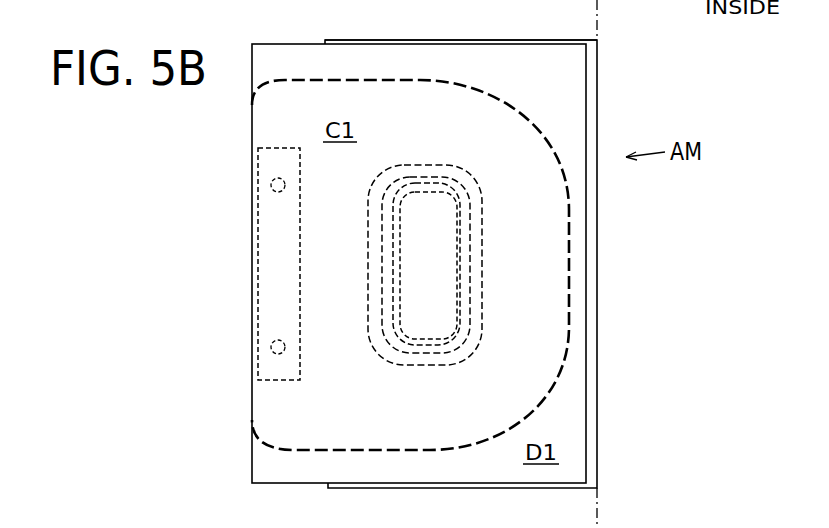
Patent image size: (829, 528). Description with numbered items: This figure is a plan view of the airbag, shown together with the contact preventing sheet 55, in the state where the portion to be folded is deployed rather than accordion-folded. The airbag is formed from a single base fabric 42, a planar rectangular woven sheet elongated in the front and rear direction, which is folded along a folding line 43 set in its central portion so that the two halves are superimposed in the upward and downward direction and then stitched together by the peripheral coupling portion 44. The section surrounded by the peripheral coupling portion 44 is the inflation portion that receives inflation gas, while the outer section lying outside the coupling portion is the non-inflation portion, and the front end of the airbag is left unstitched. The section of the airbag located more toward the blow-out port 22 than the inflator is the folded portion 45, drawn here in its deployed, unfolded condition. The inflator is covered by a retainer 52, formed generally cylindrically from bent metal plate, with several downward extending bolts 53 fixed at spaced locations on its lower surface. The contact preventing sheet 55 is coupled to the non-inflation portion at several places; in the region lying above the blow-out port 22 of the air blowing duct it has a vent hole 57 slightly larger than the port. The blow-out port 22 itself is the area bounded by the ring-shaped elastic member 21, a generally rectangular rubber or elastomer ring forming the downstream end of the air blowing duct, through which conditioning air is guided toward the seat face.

The base fabric 42 is at (253, 458).
The peripheral coupling portion 44 is at (283, 80).
The folded portion 45 is at (393, 53).
The folding line 43 is at (542, 6).
The contact preventing sheet 55 is at (593, 198).
The retainer 52 is at (258, 226).
The bolts 53 is at (268, 186).
The ring-shaped elastic member 21 is at (470, 239).
The vent hole 57 is at (476, 290).
The blow-out port 22 is at (430, 192).